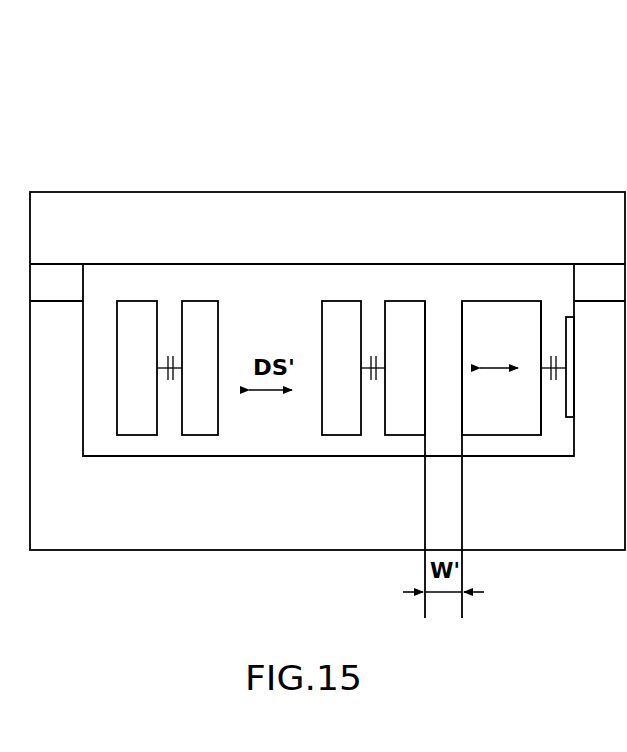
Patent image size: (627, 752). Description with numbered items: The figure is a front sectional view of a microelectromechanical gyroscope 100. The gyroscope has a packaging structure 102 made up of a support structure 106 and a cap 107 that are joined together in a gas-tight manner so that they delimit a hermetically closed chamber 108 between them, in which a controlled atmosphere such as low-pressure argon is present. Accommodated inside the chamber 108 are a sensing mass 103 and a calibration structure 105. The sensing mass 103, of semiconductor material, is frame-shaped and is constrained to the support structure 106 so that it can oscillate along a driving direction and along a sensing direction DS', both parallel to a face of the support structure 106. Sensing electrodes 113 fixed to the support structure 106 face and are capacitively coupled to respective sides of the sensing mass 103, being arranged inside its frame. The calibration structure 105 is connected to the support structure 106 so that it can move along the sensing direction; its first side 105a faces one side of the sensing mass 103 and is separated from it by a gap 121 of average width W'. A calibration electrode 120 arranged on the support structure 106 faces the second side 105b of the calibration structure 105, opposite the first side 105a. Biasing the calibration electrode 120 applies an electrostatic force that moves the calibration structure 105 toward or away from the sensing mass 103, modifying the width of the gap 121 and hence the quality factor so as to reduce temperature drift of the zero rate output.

The microelectromechanical gyroscope 100 is at (440, 97).
The packaging structure 102 is at (170, 174).
The sensing mass 103 is at (137, 428).
The calibration structure 105 is at (500, 420).
The first side 105a is at (457, 315).
The second side 105b is at (545, 420).
The support structure 106 is at (91, 530).
The cap 107 is at (375, 212).
The chamber 108 is at (273, 292).
The sensing electrodes 113 is at (200, 424).
The calibration electrode 120 is at (565, 330).
The gap 121 is at (434, 328).